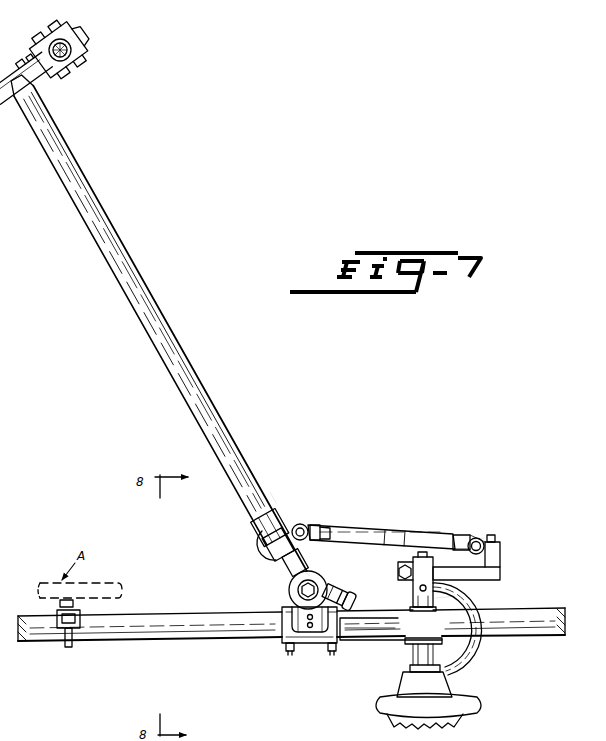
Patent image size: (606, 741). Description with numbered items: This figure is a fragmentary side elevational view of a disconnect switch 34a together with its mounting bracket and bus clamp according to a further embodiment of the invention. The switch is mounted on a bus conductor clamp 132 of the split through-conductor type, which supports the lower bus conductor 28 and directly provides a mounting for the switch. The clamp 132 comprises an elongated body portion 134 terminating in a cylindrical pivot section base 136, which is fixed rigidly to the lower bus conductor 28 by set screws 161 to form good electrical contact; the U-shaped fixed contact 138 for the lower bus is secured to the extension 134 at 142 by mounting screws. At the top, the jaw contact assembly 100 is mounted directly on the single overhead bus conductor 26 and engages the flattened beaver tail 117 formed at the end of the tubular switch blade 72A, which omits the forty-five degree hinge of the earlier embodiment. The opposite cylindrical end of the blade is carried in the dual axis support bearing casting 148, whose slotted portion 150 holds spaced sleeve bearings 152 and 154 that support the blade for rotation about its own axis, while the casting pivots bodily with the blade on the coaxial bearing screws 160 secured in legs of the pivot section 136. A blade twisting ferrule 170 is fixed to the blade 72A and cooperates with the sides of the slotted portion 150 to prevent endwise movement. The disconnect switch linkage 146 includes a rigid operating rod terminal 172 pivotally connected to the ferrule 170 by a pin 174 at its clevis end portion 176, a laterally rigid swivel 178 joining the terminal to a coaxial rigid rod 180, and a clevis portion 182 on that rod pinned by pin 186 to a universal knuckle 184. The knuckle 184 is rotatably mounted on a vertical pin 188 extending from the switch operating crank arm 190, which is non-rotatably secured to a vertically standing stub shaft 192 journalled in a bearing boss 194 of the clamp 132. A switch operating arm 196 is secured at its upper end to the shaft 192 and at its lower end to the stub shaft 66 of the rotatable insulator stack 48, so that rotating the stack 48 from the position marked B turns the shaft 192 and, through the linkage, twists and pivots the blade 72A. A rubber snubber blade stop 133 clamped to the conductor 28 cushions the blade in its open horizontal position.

The overhead bus conductor 26 is at (71, 36).
The jaw contact assembly 100 is at (90, 49).
The flattened beaver tail 117 is at (36, 86).
The switch blade 72A is at (52, 137).
The position B is at (76, 148).
The disconnect switch 34a is at (284, 498).
The dual axis support bearing casting 148 is at (279, 512).
The blade twisting ferrule 170 is at (300, 524).
The pin 174 is at (315, 524).
The clevis end portion 176 is at (332, 526).
The laterally rigid swivel 178 is at (360, 528).
The coaxial rigid rod 180 is at (416, 528).
The disconnect switch linkage 146 is at (440, 523).
The clevis portion 182 is at (477, 538).
The pin 186 is at (490, 533).
The vertical pin 188 is at (497, 536).
The universal knuckle 184 is at (503, 550).
The switch operating crank arm 190 is at (486, 574).
The bearing boss 194 is at (468, 596).
The stub shaft 192 is at (407, 566).
The sleeve bearing 152 is at (258, 535).
The slotted portion 150 is at (262, 548).
The rigid operating rod terminal 172 is at (287, 575).
The sleeve bearing 154 is at (302, 572).
The bearing screws 160 is at (289, 592).
The cylindrical pivot section base 136 is at (332, 588).
The fixed contact 138 is at (348, 591).
The contact mounting location 142 is at (358, 596).
The bus conductor clamp 132 is at (283, 645).
The set screws 161 is at (328, 654).
The elongated body portion 134 is at (363, 627).
The lower bus conductor 28 is at (137, 641).
The rubber snubber blade stop 133 is at (76, 604).
The stub shaft 66 is at (401, 667).
The insulator stack 48 is at (450, 690).
The switch operating arm 196 is at (481, 648).